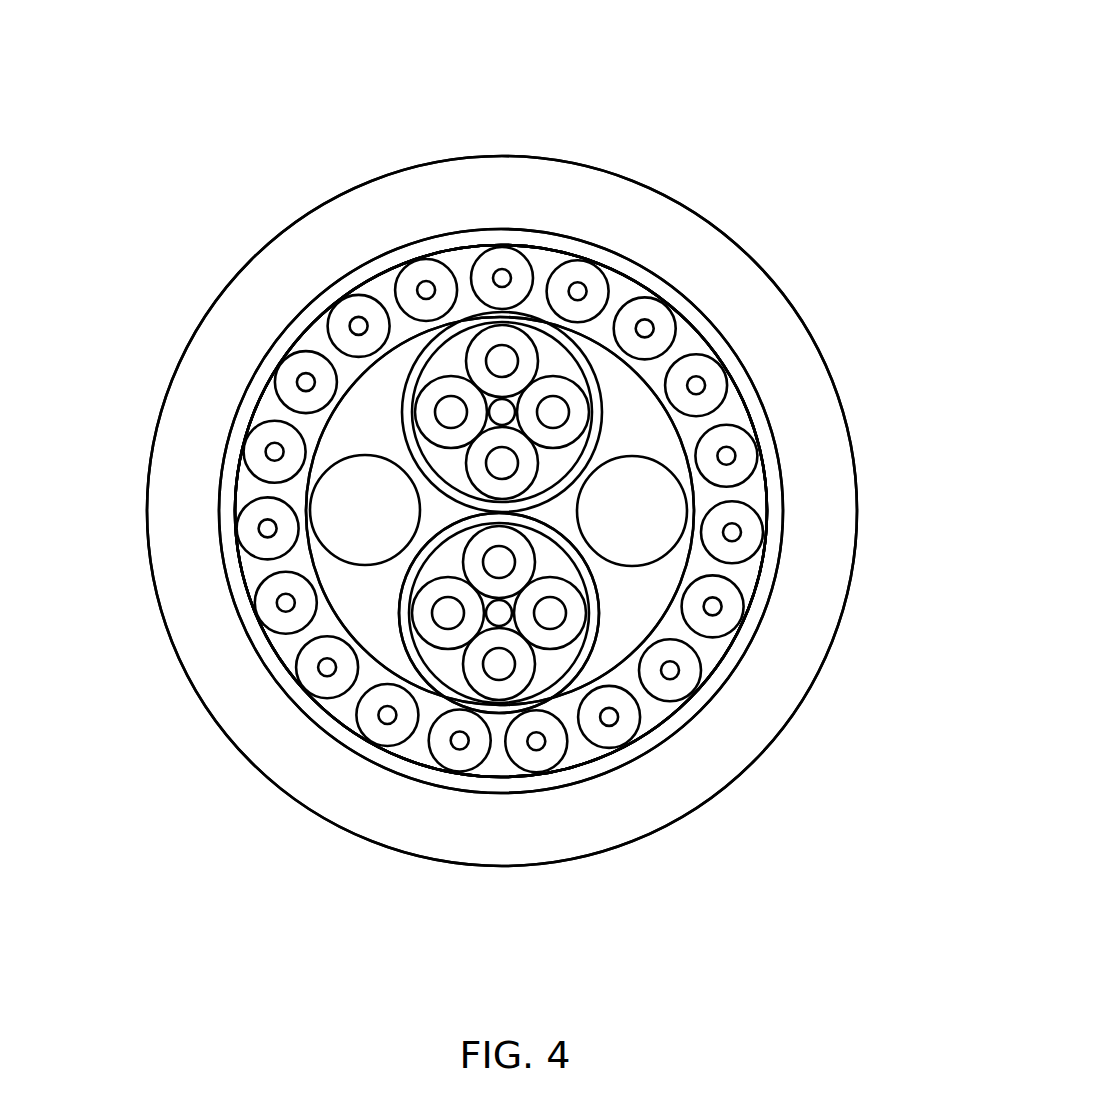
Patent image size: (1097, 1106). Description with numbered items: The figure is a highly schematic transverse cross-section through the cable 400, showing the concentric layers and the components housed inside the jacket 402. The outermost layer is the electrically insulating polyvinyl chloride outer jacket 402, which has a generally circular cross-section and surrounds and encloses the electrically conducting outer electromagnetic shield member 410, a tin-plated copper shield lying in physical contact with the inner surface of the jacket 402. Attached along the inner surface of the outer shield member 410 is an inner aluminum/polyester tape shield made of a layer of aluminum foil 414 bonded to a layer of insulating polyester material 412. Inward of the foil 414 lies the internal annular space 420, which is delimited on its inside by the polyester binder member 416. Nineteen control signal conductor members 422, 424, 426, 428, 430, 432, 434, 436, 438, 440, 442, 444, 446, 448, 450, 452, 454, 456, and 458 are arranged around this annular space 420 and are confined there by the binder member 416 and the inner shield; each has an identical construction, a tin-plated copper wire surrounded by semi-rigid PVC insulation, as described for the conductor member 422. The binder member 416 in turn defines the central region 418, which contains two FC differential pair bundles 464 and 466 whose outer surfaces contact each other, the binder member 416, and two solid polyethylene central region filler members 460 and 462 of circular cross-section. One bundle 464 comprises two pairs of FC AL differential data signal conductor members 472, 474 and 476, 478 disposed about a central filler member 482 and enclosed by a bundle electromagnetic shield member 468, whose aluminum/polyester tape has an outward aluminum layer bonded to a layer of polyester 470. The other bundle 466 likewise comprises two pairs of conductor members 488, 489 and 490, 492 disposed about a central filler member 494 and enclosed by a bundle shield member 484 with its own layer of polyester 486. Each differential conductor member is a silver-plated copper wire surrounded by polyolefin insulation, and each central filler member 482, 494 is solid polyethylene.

The cable 400 is at (678, 63).
The outer jacket/housing 402 is at (514, 158).
The outer electromagnetic shield member 410 is at (745, 380).
The layer of insulating polyester material 412 is at (613, 267).
The layer of aluminum foil 414 is at (767, 478).
The binder member 416 is at (715, 670).
The central space/region 418 is at (329, 574).
The internal annular space 420 is at (301, 647).
The control signal conductor member 422 is at (330, 314).
The control signal conductor member 424 is at (278, 384).
The control signal conductor member 426 is at (247, 458).
The control signal conductor member 428 is at (247, 543).
The control signal conductor member 430 is at (266, 624).
The control signal conductor member 432 is at (319, 694).
The control signal conductor member 434 is at (385, 745).
The control signal conductor member 436 is at (465, 771).
The control signal conductor member 438 is at (555, 772).
The control signal conductor member 440 is at (629, 731).
The control signal conductor member 442 is at (696, 679).
The control signal conductor member 444 is at (741, 606).
The control signal conductor member 446 is at (760, 526).
The control signal conductor member 448 is at (750, 439).
The control signal conductor member 450 is at (755, 380).
The control signal conductor member 452 is at (652, 304).
The control signal conductor member 454 is at (575, 262).
The control signal conductor member 456 is at (490, 257).
The control signal conductor member 458 is at (407, 275).
The central region filler member 460 is at (309, 497).
The central region filler member 462 is at (566, 543).
The FC differential pair bundle 464 is at (333, 713).
The FC differential pair bundle 466 is at (460, 362).
The bundle electromagnetic shield member 468 is at (595, 767).
The layer of polyester 470 is at (418, 640).
The FC AL differential data signal conductor/transmitter member 472 is at (460, 684).
The FC AL differential data signal conductor/transmitter member 474 is at (417, 606).
The FC AL differential data signal conductor/transmitter member 476 is at (537, 656).
The FC AL differential data signal conductor/transmitter member 478 is at (588, 605).
The central filler member 482 is at (497, 601).
The bundle shield member 484 is at (712, 363).
The layer of polyester 486 is at (418, 391).
The FC AL differential data signal conductor/transmitter member 488 is at (483, 322).
The FC AL differential data signal conductor/transmitter member 489 is at (590, 398).
The FC AL differential data signal conductor/transmitter member 490 is at (553, 450).
The FC AL differential data signal conductor/transmitter member 492 is at (414, 430).
The central filler member 494 is at (493, 422).